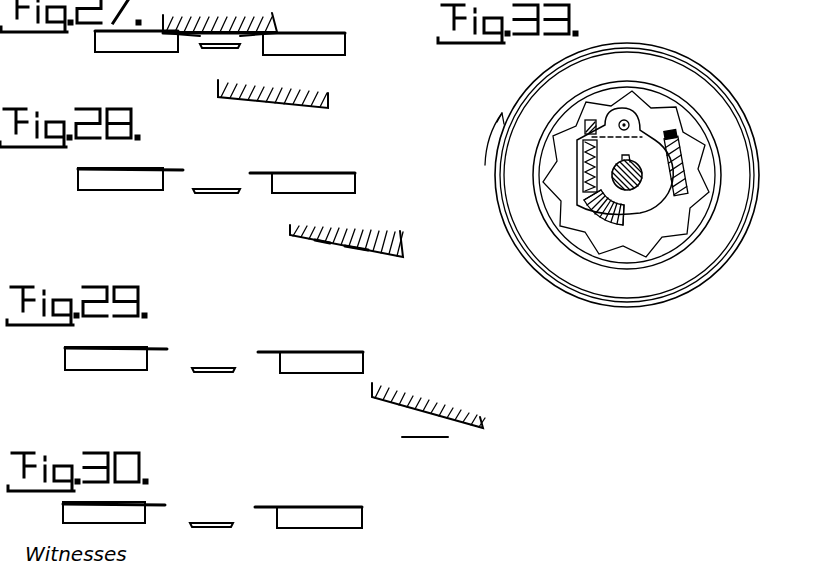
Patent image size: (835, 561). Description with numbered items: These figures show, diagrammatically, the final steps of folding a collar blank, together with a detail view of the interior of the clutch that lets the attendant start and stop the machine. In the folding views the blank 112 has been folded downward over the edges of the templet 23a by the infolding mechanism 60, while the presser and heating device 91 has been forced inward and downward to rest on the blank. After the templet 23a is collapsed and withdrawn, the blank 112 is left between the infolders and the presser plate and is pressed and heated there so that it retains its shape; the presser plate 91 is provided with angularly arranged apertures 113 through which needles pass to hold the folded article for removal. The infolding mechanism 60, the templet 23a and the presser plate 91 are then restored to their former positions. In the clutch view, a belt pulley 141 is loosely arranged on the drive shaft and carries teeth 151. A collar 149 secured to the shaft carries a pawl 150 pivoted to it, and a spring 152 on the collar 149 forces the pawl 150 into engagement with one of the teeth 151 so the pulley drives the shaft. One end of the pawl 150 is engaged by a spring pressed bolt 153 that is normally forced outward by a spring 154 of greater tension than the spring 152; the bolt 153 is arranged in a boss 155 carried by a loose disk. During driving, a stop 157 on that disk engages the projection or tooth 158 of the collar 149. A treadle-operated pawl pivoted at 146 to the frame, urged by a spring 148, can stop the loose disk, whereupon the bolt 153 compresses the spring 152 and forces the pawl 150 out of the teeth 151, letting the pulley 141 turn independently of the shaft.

In FIG. 27, the templet 23a is at (222, 49).
In FIG. 28, the templet 23a is at (233, 194).
In FIG. 29, the templet 23a is at (212, 373).
In FIG. 30, the templet 23a is at (212, 528).
In FIG. 27, the infolding mechanism 60 is at (329, 33).
In FIG. 28, the infolding mechanism 60 is at (302, 172).
In FIG. 29, the infolding mechanism 60 is at (310, 350).
In FIG. 30, the infolding mechanism 60 is at (308, 505).
In FIG. 27, the presser and heating device 91 is at (276, 22).
In FIG. 28, the presser and heating device 91 is at (292, 236).
In FIG. 29, the presser and heating device 91 is at (443, 405).
In FIG. 27, the blank 112 is at (236, 33).
In FIG. 28, the blank 112 is at (328, 244).
In FIG. 29, the blank 112 is at (427, 454).
In FIG. 27, the angularly arranged apertures 113 is at (215, 34).
In FIG. 28, the angularly arranged apertures 113 is at (345, 248).
In FIG. 33, the belt pulley 141 is at (530, 248).
In FIG. 33, the pivot 146 is at (623, 0).
In FIG. 33, the spring 148 is at (695, 0).
In FIG. 33, the collar 149 is at (640, 197).
In FIG. 33, the pawl 150 is at (653, 117).
In FIG. 33, the teeth 151 is at (690, 123).
In FIG. 33, the spring 152 is at (593, 122).
In FIG. 33, the spring pressed bolt 153 is at (647, 138).
In FIG. 33, the spring 154 is at (673, 170).
In FIG. 33, the boss 155 is at (687, 190).
In FIG. 33, the stop 157 is at (597, 228).
In FIG. 33, the projection or tooth 158 is at (588, 207).